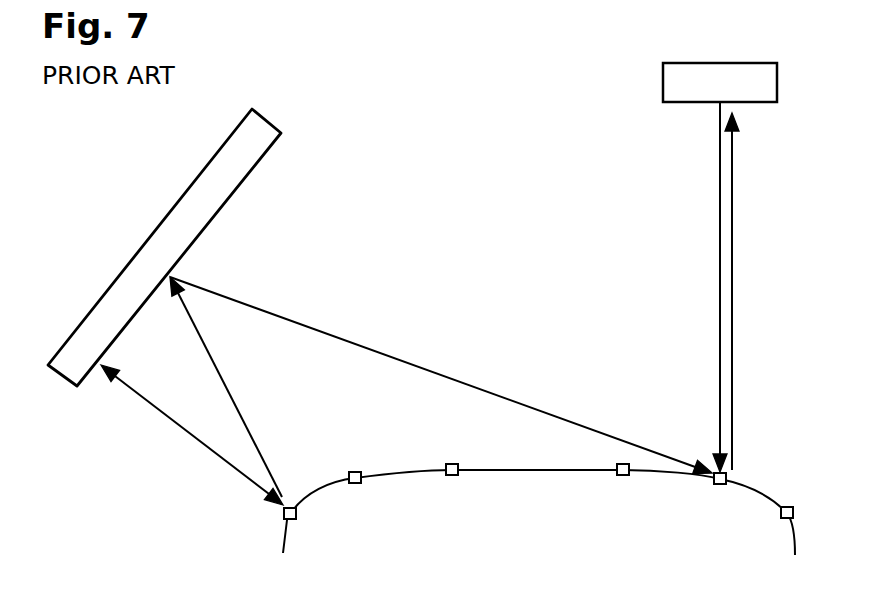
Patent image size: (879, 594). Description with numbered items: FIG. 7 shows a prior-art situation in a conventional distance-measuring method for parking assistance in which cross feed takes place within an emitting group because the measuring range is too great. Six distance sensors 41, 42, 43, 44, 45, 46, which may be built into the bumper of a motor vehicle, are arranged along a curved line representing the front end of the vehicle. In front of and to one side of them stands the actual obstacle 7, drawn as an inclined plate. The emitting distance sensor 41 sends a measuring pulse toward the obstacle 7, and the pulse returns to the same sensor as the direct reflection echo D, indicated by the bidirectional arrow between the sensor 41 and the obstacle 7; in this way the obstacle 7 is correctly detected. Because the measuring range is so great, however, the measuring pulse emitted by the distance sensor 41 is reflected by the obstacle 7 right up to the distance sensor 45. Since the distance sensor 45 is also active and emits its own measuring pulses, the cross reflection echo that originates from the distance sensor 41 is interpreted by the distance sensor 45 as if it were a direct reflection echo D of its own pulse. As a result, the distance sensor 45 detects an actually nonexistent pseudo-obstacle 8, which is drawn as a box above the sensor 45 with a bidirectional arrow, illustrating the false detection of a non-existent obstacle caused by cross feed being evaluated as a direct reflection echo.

The obstacle 7 is at (122, 302).
The pseudo-obstacle 8 is at (720, 267).
The distance sensor 41 is at (309, 536).
The distance sensor 42 is at (371, 503).
The distance sensor 43 is at (465, 496).
The distance sensor 44 is at (626, 498).
The distance sensor 45 is at (720, 507).
The distance sensor 46 is at (778, 549).
The direct reflection echo D is at (198, 447).